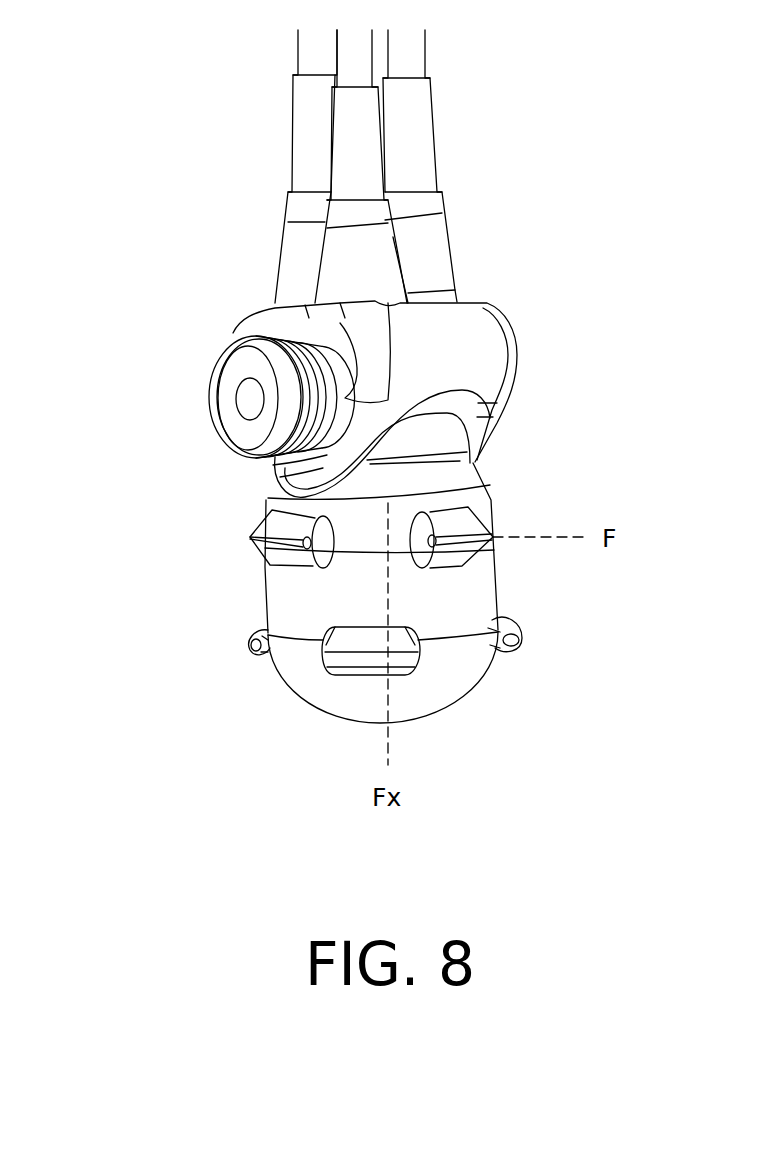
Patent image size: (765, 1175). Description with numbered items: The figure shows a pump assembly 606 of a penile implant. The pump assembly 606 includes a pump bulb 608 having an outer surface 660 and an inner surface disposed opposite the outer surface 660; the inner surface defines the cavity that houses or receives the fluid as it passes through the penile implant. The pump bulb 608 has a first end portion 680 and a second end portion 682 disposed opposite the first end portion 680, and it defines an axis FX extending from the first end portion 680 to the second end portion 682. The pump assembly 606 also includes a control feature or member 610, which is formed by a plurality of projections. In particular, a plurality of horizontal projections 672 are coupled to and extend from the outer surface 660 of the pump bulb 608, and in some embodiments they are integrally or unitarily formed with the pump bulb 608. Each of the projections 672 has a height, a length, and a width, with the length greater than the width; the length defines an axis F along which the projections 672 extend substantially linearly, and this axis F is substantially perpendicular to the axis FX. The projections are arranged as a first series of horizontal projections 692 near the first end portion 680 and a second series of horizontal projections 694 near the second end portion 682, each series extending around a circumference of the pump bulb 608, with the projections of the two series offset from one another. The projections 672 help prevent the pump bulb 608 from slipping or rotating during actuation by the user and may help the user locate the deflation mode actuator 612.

The pump assembly 606 is at (105, 376).
The deflation mode actuator 612 is at (222, 370).
The second end portion 682 is at (480, 453).
The pump bulb 608 is at (500, 583).
The horizontal projections 672 is at (272, 523).
The second series of horizontal projections 694 is at (255, 535).
The control feature or member 610 is at (520, 645).
The first series of horizontal projections 692 is at (257, 653).
The outer surface 660 is at (468, 672).
The first end portion 680 is at (452, 710).